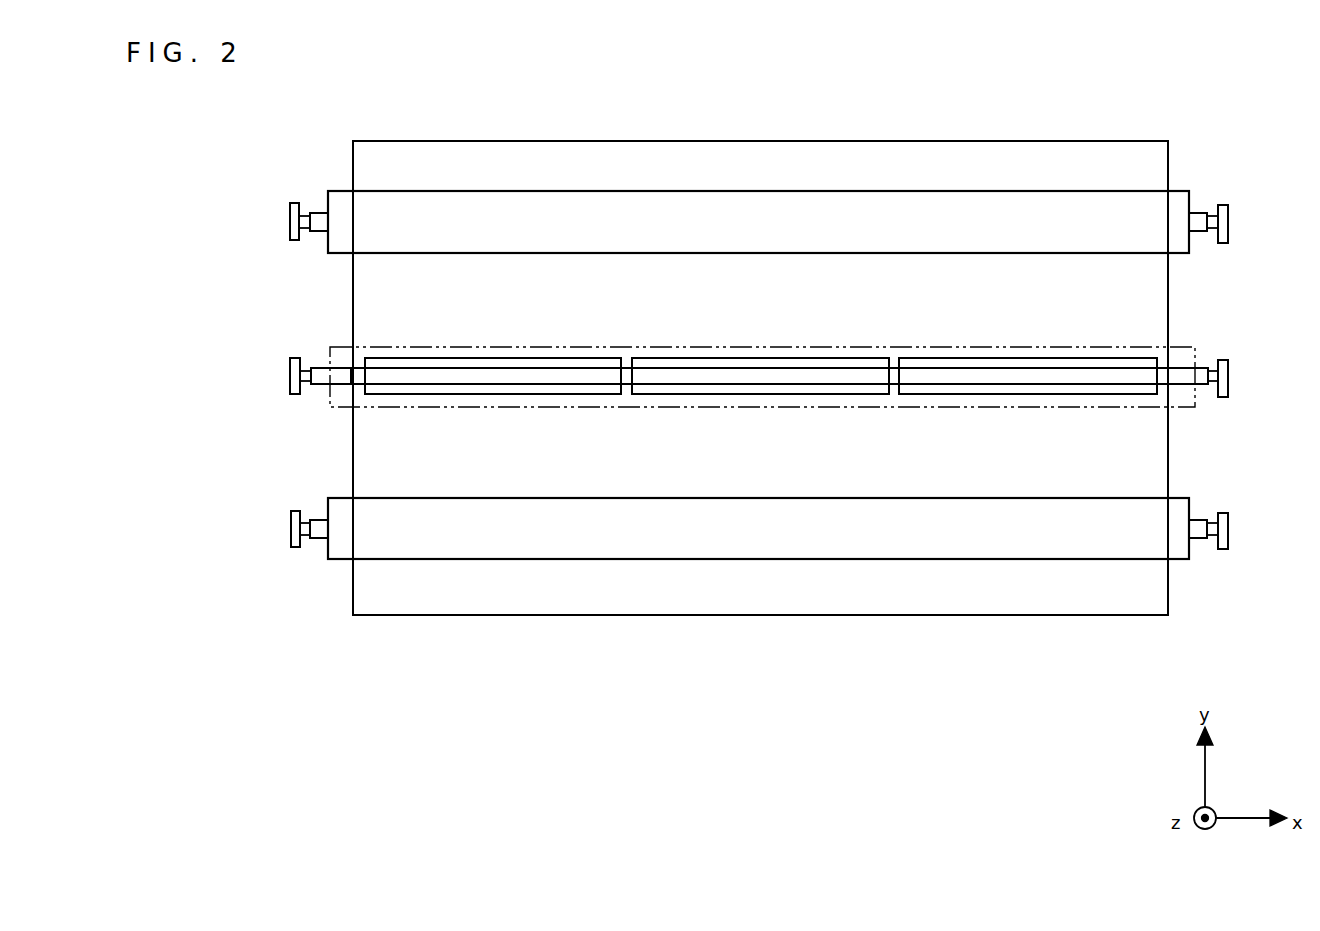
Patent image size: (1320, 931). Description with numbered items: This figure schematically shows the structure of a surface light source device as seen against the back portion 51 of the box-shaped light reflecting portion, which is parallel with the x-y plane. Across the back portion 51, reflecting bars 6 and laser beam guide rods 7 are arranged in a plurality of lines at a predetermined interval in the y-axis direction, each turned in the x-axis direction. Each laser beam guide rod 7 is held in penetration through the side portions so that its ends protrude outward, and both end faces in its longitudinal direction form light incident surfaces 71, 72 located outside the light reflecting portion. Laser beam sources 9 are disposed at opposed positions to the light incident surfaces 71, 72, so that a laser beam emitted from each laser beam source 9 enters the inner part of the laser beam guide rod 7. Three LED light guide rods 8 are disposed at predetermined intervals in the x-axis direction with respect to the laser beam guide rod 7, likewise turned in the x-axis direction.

The back portion 51 is at (1007, 157).
The reflecting bar 6 is at (1167, 244).
The laser beam guide rod 7 is at (320, 212).
The light incident surface 71 is at (1210, 367).
The light incident surface 72 is at (313, 368).
The LED light guide rod 8 is at (445, 360).
The laser beam source 9 is at (291, 218).